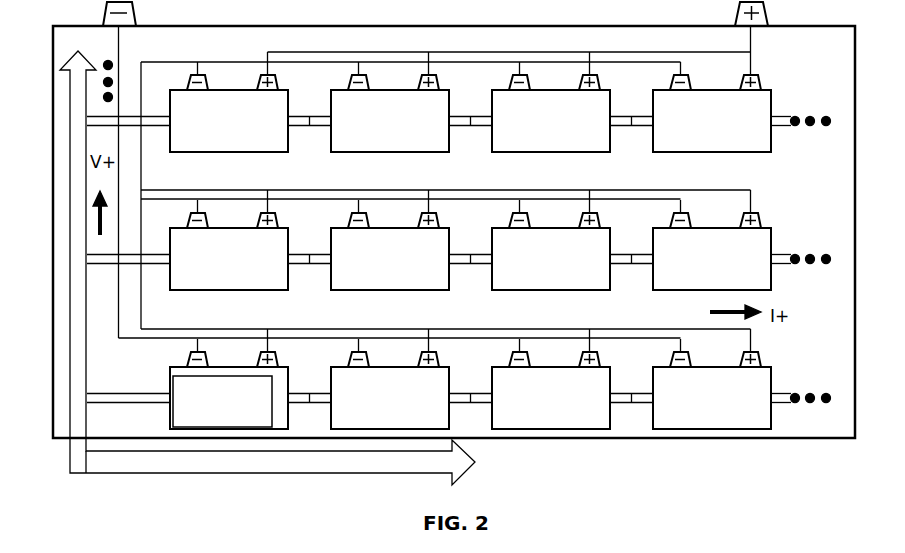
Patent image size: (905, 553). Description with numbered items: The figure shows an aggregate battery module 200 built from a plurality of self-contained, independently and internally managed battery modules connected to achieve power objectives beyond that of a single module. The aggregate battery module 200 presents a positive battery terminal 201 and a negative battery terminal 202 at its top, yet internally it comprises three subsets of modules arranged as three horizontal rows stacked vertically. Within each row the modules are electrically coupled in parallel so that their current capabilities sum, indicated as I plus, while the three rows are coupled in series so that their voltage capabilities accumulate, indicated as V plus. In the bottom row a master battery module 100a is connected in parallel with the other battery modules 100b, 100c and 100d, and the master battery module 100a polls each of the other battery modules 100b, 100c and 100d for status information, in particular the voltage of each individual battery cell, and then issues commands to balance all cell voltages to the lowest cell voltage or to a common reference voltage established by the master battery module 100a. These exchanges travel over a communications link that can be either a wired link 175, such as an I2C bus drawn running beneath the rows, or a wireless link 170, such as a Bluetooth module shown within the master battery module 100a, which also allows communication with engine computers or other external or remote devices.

The aggregate battery module 200 is at (86, 22).
The positive battery terminal 201 is at (773, 27).
The negative battery terminal 202 is at (145, 170).
The master battery module 100a is at (197, 153).
The battery module 100b is at (356, 153).
The battery module 100c is at (512, 153).
The battery module 100d is at (678, 153).
The wireless communications link 170 is at (167, 382).
The wired communications link 175 is at (80, 473).